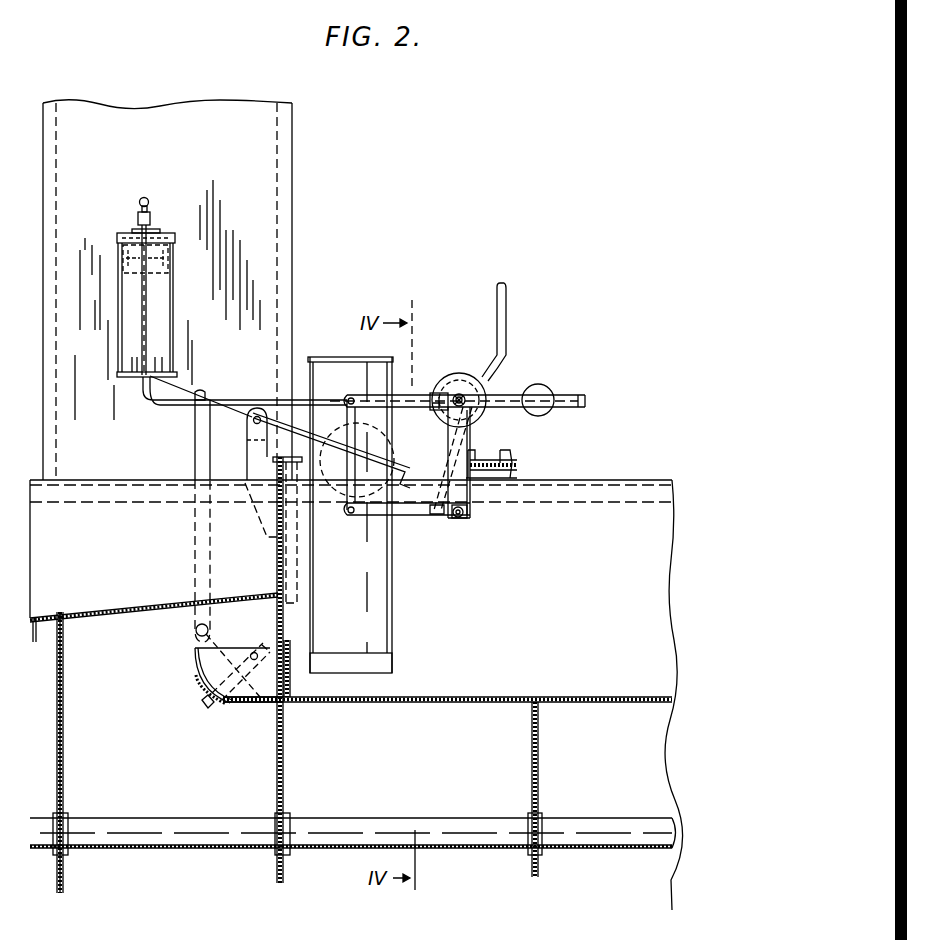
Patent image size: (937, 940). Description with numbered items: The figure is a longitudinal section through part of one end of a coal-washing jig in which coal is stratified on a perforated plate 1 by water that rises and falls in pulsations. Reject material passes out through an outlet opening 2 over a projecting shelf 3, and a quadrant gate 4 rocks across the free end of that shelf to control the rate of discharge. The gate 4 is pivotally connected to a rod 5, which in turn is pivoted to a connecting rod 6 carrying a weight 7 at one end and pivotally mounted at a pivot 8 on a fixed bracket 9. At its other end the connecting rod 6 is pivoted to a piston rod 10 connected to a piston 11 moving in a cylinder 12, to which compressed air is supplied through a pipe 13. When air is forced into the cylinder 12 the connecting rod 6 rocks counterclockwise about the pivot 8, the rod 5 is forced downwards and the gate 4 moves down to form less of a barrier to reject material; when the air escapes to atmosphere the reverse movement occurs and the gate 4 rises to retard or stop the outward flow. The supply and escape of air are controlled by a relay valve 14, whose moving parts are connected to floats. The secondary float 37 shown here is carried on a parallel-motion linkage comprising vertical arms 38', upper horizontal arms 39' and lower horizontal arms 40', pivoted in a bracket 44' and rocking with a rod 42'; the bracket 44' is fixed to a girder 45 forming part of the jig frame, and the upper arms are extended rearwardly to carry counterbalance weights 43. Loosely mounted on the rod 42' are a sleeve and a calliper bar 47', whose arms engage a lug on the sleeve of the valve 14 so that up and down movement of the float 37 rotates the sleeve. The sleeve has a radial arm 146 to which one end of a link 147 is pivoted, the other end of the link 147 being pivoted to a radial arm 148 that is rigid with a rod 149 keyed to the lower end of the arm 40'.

The perforated plate 1 is at (592, 700).
The outlet opening 2 is at (287, 687).
The projecting shelf 3 is at (243, 702).
The quadrant gate 4 is at (195, 677).
The rod 5 is at (199, 545).
The connecting rod 6 is at (233, 413).
The weight 7 is at (385, 455).
The pivot 8 is at (252, 415).
The fixed bracket 9 is at (252, 462).
The piston rod 10 is at (153, 328).
The piston 11 is at (162, 260).
The cylinder 12 is at (127, 307).
The pipe 13 is at (139, 202).
The relay valve 14 is at (453, 362).
The secondary float 37 is at (353, 590).
The vertical arms 38' is at (394, 480).
The upper horizontal arms 39' is at (457, 379).
The lower horizontal arms 40' is at (407, 523).
The rod 42' is at (487, 410).
The counterbalance weights 43 is at (537, 386).
The bracket 44' is at (484, 462).
The girder 45 is at (509, 455).
The calliper bar 47' is at (424, 413).
The radial arm 146 is at (482, 395).
The link 147 is at (442, 487).
The radial arm 148 is at (455, 522).
The rod 149 is at (468, 515).